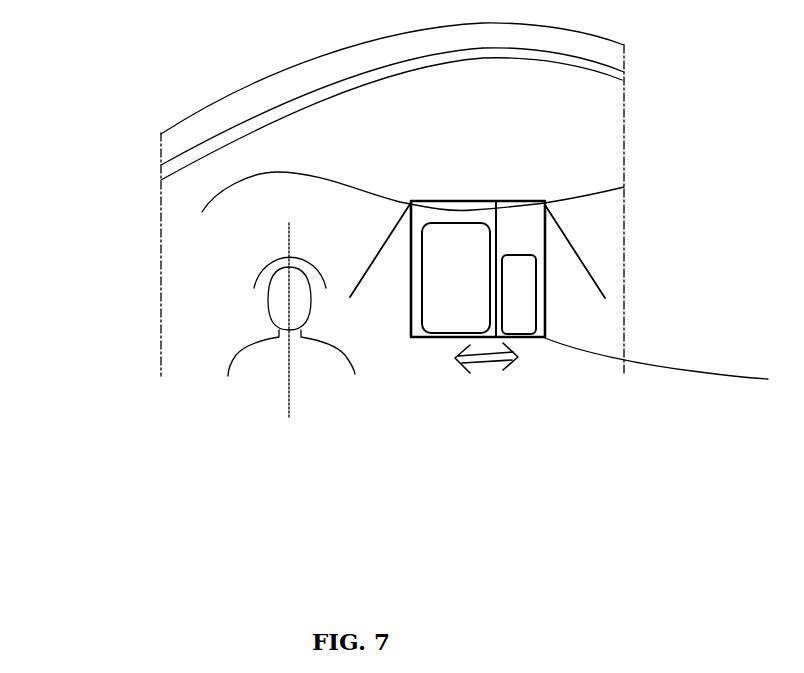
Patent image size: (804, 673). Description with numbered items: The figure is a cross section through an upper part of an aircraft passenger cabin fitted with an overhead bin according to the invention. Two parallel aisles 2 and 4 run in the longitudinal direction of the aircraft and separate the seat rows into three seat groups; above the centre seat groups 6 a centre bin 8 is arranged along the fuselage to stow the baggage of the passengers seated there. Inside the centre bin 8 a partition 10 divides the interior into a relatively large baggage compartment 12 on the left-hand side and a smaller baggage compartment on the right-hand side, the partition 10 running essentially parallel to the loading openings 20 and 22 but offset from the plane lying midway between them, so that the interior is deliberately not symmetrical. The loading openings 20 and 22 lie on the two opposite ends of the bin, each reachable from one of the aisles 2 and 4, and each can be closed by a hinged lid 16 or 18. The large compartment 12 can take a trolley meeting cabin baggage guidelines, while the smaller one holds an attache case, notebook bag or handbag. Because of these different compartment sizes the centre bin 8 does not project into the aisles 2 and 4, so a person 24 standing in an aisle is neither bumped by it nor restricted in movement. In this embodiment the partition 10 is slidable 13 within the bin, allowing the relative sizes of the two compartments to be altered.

The aisle 2 is at (220, 536).
The aisle 4 is at (619, 536).
The centre seat group 6 is at (493, 536).
The centre bin 8 is at (472, 196).
The partition 10 is at (496, 232).
The baggage compartment 12 is at (407, 222).
The slidable partition 13 is at (488, 368).
The hinged lid 16 is at (363, 272).
The hinged lid 18 is at (595, 280).
The loading opening 20 is at (398, 305).
The loading opening 22 is at (568, 304).
The person 24 is at (258, 371).